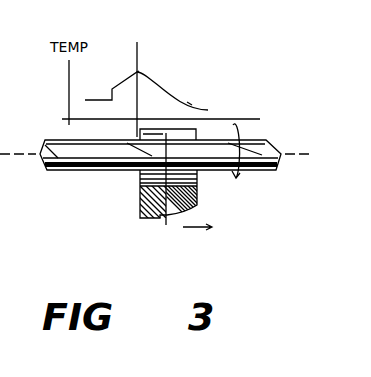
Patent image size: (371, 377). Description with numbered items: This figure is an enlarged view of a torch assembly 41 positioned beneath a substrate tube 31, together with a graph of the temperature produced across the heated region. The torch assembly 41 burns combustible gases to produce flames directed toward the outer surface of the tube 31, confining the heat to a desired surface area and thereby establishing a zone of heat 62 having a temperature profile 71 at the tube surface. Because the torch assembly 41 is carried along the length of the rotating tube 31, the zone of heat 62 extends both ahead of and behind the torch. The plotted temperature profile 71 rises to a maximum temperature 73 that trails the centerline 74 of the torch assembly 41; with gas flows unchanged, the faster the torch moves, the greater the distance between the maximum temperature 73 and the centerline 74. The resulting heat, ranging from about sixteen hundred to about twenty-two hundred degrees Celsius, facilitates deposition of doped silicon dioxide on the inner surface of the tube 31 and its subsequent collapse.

The tube 31 is at (252, 168).
The torch assembly 41 is at (197, 202).
The zone of heat 62 is at (173, 82).
The temperature profile 71 is at (190, 100).
The maximum temperature 73 is at (137, 68).
The centerline 74 is at (166, 220).